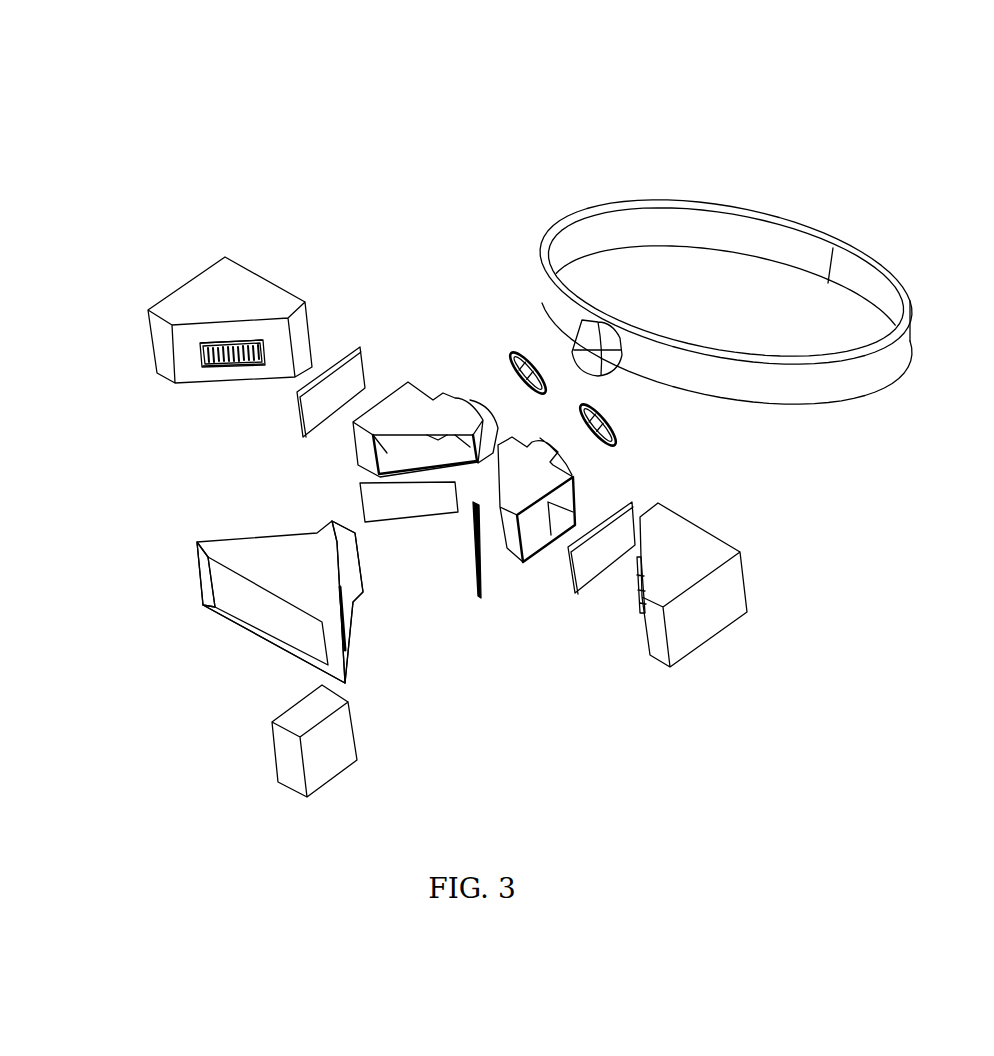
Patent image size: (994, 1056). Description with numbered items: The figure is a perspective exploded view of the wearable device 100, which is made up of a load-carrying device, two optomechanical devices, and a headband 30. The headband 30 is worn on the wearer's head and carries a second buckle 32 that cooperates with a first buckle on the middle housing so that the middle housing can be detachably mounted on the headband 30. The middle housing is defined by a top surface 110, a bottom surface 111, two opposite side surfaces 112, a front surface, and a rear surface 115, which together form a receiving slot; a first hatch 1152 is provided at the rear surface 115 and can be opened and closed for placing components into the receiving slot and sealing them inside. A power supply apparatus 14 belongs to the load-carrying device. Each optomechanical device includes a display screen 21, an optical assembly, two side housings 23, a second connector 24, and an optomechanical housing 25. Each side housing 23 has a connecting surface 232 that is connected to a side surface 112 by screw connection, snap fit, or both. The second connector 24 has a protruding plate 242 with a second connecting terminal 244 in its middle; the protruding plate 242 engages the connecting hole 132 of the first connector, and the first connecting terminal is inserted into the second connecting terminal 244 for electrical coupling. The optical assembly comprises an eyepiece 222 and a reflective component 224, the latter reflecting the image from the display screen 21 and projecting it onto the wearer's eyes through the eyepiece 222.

The wearable device 100 is at (535, 55).
The headband 30 is at (620, 230).
The second buckle 32 is at (578, 350).
The eyepiece 222 is at (547, 380).
The side housing 23 is at (208, 300).
The connecting surface 232 is at (246, 381).
The second connector 24 is at (77, 344).
The protruding plate 242 is at (207, 343).
The second connecting terminal 244 is at (207, 367).
The display screen 21 is at (358, 347).
The optomechanical housing 25 is at (532, 478).
The reflective component 224 is at (479, 590).
The top surface 110 is at (295, 539).
The side surface 112 is at (226, 526).
The rear surface 115 is at (189, 581).
The first hatch 1152 is at (230, 602).
The bottom surface 111 is at (236, 638).
The connecting hole 132 is at (343, 610).
The power supply apparatus 14 is at (342, 740).